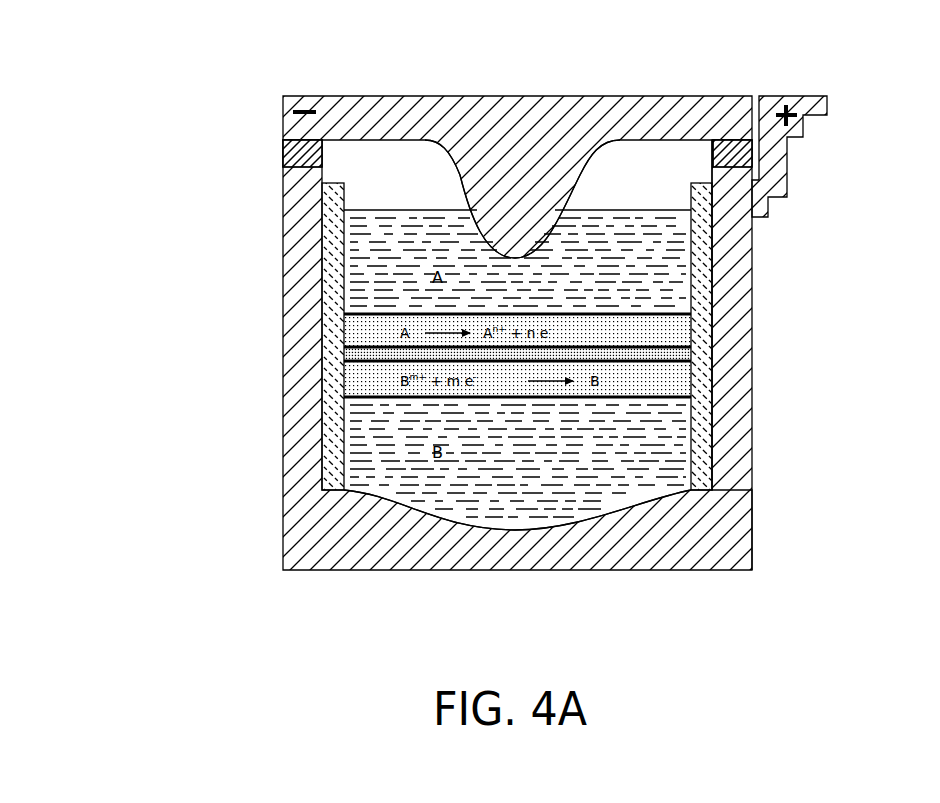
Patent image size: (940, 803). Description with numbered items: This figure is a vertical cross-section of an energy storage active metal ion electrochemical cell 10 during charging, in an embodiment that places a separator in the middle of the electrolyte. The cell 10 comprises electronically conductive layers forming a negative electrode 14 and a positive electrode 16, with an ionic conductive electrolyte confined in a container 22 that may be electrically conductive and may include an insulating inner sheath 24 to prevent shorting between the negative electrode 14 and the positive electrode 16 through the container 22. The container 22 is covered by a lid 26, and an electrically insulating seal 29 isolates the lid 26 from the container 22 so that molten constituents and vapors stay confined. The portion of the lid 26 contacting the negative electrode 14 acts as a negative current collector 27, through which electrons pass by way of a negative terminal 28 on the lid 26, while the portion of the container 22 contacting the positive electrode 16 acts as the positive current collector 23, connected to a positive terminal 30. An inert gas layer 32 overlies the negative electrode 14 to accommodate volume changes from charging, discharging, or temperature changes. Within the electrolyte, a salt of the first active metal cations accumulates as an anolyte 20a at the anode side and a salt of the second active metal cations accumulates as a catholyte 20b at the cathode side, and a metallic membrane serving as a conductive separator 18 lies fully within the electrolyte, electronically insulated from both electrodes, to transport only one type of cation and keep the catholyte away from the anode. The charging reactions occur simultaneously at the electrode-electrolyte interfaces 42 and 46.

The electrochemical cell 10 is at (237, 52).
The negative electrode 14 is at (340, 210).
The positive electrode 16 is at (347, 465).
The conductive separator 18 is at (355, 352).
The anolyte 20a is at (358, 330).
The catholyte 20b is at (355, 383).
The container 22 is at (296, 527).
The positive current collector 23 is at (545, 530).
The insulating inner sheath 24 is at (712, 475).
The lid 26 is at (528, 105).
The negative current collector 27 is at (535, 205).
The negative terminal 28 is at (283, 110).
The electrically insulating seal 29 is at (283, 148).
The positive terminal 30 is at (827, 105).
The inert gas layer 32 is at (620, 165).
The electrode-electrolyte interface 42 is at (660, 313).
The electrode-electrolyte interface 46 is at (665, 397).